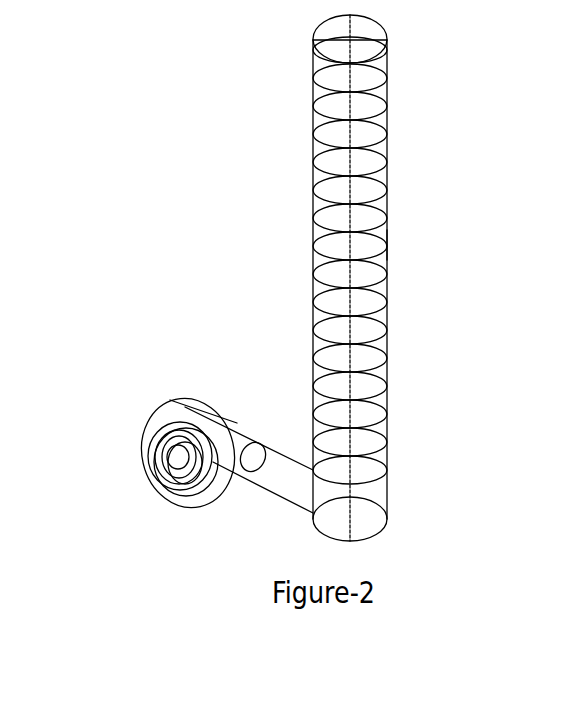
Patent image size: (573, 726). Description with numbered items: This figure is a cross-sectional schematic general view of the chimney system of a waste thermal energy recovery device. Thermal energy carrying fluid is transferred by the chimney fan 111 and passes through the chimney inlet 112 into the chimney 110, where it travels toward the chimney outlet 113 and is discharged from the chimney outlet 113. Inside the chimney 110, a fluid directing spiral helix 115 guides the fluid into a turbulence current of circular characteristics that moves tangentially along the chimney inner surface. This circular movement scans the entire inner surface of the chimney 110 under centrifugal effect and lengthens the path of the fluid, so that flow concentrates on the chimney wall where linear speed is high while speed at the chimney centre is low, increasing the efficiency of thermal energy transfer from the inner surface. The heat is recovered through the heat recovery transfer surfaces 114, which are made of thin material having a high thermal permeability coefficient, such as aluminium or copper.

The chimney 110 is at (311, 367).
The chimney fan 111 is at (168, 415).
The chimney inlet 112 is at (285, 472).
The chimney outlet 113 is at (313, 41).
The heat recovery transfer surfaces 114 is at (387, 247).
The fluid directing spiral helix 115 is at (320, 204).